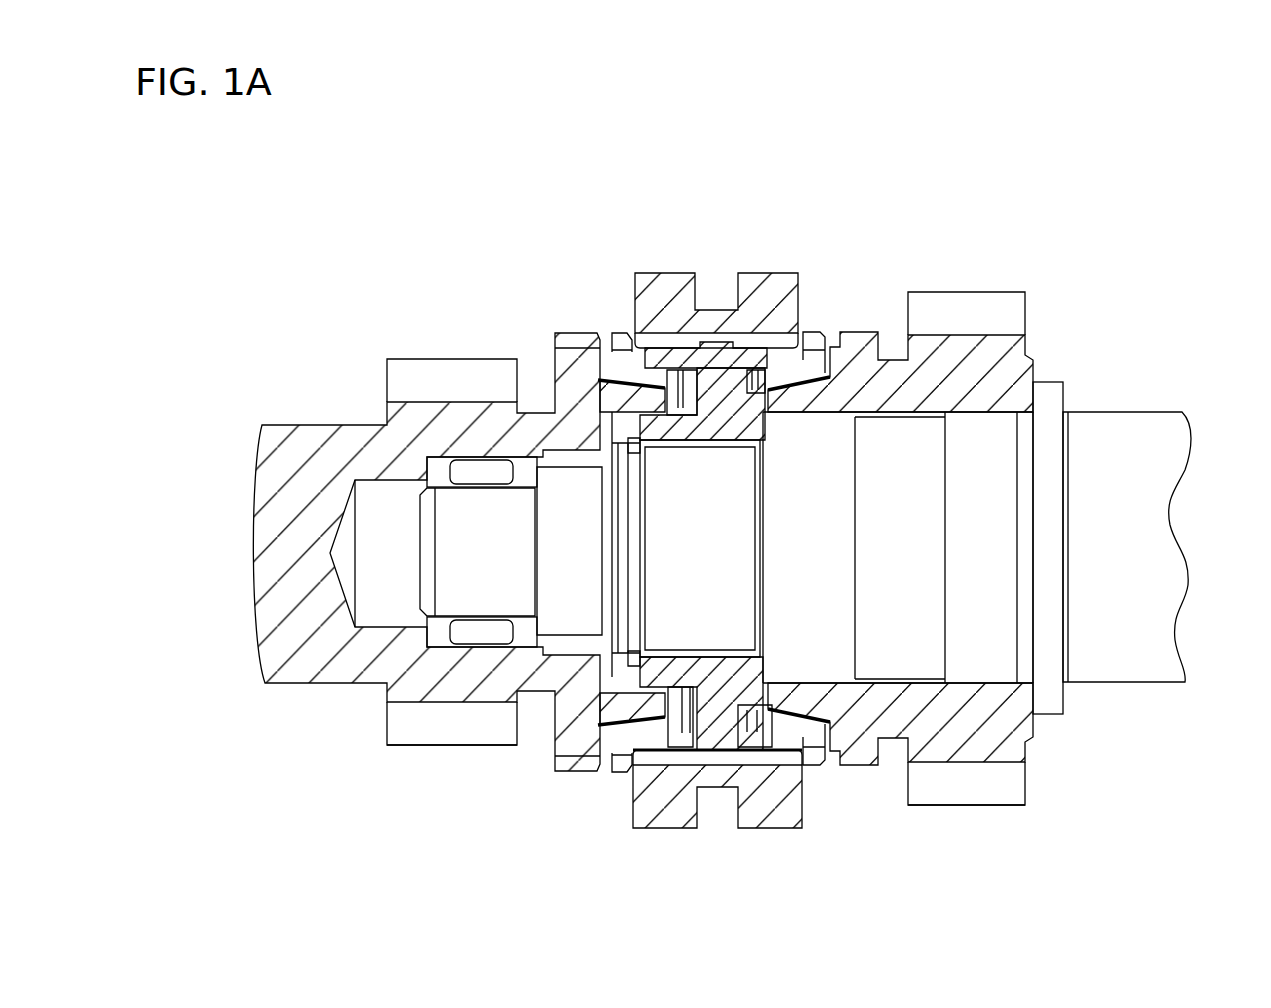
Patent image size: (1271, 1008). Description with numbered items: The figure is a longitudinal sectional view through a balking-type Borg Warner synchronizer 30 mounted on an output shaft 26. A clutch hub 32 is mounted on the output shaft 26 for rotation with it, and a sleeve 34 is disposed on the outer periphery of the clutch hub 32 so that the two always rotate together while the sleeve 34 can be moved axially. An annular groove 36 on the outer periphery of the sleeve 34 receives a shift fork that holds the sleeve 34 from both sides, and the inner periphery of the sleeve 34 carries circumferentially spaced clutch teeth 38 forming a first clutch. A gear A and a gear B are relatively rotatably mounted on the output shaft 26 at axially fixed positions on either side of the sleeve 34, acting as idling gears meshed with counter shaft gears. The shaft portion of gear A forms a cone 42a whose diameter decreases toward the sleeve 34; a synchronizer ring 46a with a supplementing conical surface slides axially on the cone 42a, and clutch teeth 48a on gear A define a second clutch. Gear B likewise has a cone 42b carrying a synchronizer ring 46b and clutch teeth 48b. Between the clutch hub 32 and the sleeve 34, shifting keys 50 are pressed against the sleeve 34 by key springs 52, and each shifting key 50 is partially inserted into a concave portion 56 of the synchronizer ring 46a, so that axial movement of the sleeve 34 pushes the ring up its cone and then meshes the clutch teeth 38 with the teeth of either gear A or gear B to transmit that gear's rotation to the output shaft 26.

The output shaft 26 is at (1125, 440).
The synchronizer 30 is at (892, 95).
The clutch hub 32 is at (717, 722).
The sleeve 34 is at (762, 293).
The annular groove 36 is at (725, 293).
The clutch teeth 38 is at (682, 337).
The cone 42a is at (620, 393).
The cone 42b is at (808, 397).
The synchronizer ring 46a is at (593, 350).
The synchronizer ring 46b is at (879, 323).
The clutch teeth 48a is at (560, 319).
The clutch teeth 48b is at (910, 355).
The shifting key 50 is at (780, 300).
The key spring 52 is at (800, 330).
The concave portion 56 is at (628, 345).
The gear A is at (445, 730).
The gear B is at (967, 790).